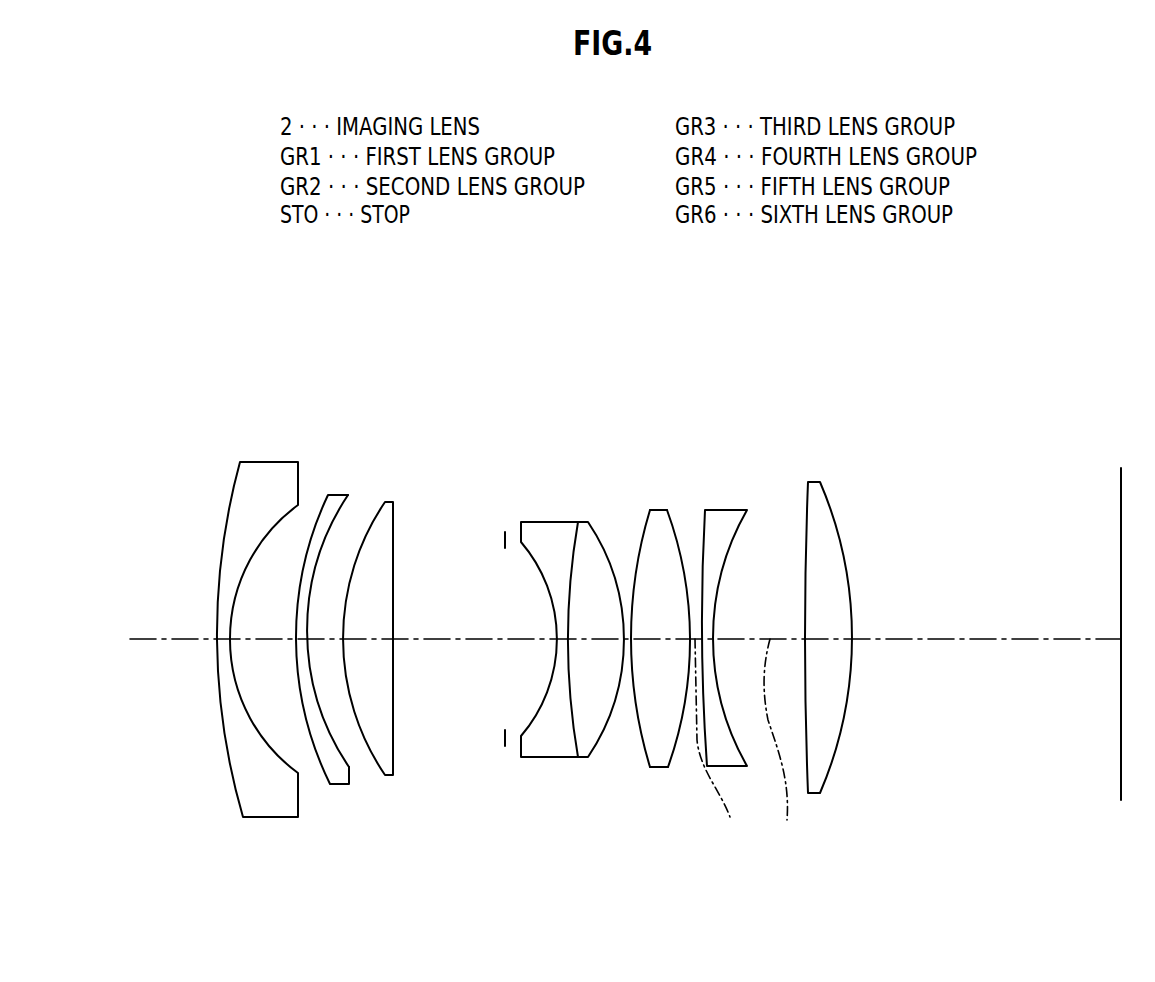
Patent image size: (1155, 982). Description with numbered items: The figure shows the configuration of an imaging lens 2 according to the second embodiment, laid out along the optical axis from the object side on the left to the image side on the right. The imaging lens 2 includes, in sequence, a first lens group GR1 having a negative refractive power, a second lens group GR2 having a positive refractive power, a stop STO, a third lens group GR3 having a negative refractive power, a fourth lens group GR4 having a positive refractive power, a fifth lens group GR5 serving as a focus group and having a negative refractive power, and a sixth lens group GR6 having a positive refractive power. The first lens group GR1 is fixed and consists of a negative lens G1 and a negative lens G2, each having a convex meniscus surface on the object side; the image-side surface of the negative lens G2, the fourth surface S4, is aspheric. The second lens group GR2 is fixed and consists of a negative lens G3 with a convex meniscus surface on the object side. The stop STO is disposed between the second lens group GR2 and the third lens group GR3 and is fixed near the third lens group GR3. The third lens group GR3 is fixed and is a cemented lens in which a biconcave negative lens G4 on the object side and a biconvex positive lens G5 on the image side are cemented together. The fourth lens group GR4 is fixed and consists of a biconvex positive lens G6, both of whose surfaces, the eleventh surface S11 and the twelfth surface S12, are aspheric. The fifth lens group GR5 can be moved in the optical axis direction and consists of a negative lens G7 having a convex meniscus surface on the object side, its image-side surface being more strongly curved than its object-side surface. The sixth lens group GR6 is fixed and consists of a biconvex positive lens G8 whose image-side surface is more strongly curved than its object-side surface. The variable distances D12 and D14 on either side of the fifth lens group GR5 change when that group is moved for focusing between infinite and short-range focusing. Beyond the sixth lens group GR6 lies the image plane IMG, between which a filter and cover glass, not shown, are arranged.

The imaging lens 2 is at (150, 295).
The first lens group GR1 is at (322, 334).
The second lens group GR2 is at (410, 334).
The third lens group GR3 is at (588, 334).
The fourth lens group GR4 is at (677, 334).
The fifth lens group GR5 is at (750, 334).
The sixth lens group GR6 is at (840, 334).
The stop STO is at (505, 532).
The negative lens G1 is at (268, 462).
The negative lens G2 is at (335, 495).
The negative lens G3 is at (390, 502).
The negative lens G4 is at (557, 522).
The positive lens G5 is at (593, 522).
The positive lens G6 is at (652, 510).
The negative lens G7 is at (727, 510).
The positive lens G8 is at (830, 503).
The fourth surface S4 is at (350, 755).
The eleventh surface S11 is at (643, 743).
The twelfth surface S12 is at (677, 743).
The variable distance D12 is at (722, 746).
The variable distance D14 is at (783, 746).
The image plane IMG is at (1121, 495).